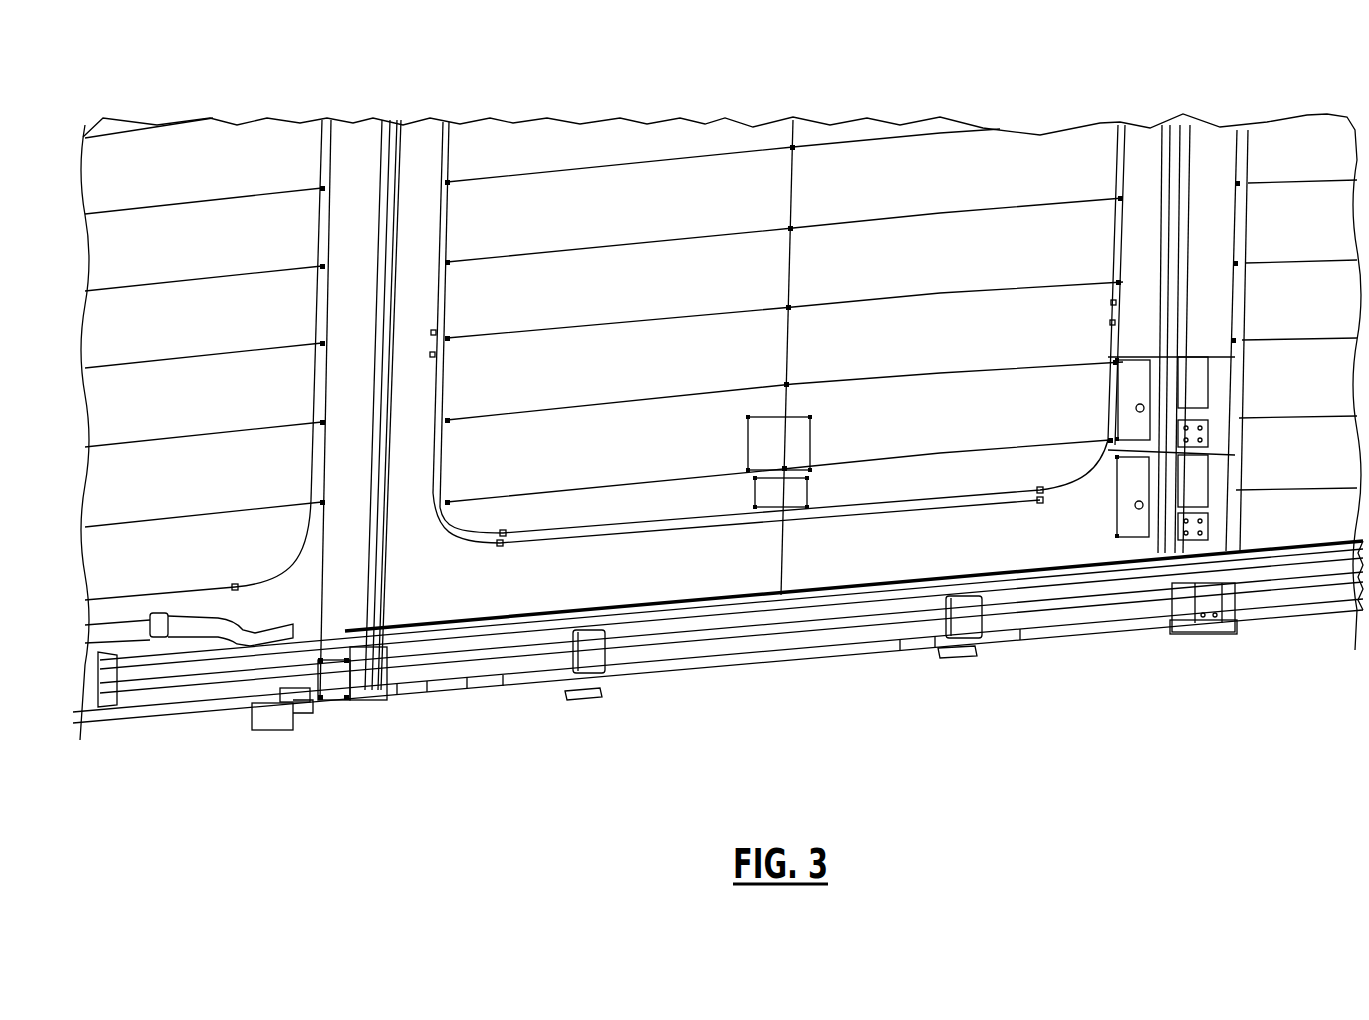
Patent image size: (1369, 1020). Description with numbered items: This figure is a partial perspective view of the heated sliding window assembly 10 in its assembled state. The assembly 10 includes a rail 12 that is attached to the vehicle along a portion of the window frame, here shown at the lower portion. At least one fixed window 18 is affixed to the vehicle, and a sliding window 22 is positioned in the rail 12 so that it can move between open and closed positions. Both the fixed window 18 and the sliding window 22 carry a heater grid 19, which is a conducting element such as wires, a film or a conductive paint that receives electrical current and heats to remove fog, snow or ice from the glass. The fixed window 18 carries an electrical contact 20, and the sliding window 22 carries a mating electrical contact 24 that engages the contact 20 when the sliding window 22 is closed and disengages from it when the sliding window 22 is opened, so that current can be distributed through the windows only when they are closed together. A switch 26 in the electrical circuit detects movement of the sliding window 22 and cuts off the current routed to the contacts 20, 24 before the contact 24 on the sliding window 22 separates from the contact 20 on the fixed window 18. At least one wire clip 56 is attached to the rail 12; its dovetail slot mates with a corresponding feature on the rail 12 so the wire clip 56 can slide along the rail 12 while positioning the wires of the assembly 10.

The heated sliding window assembly 10 is at (626, 757).
The rail 12 is at (487, 668).
The fixed window 18 is at (112, 572).
The heater grid 19 is at (540, 163).
The electrical contact 20 is at (1210, 507).
The sliding window 22 is at (833, 487).
The electrical contact 24 is at (1133, 547).
The switch 26 is at (307, 722).
The wire clip 56 is at (607, 658).